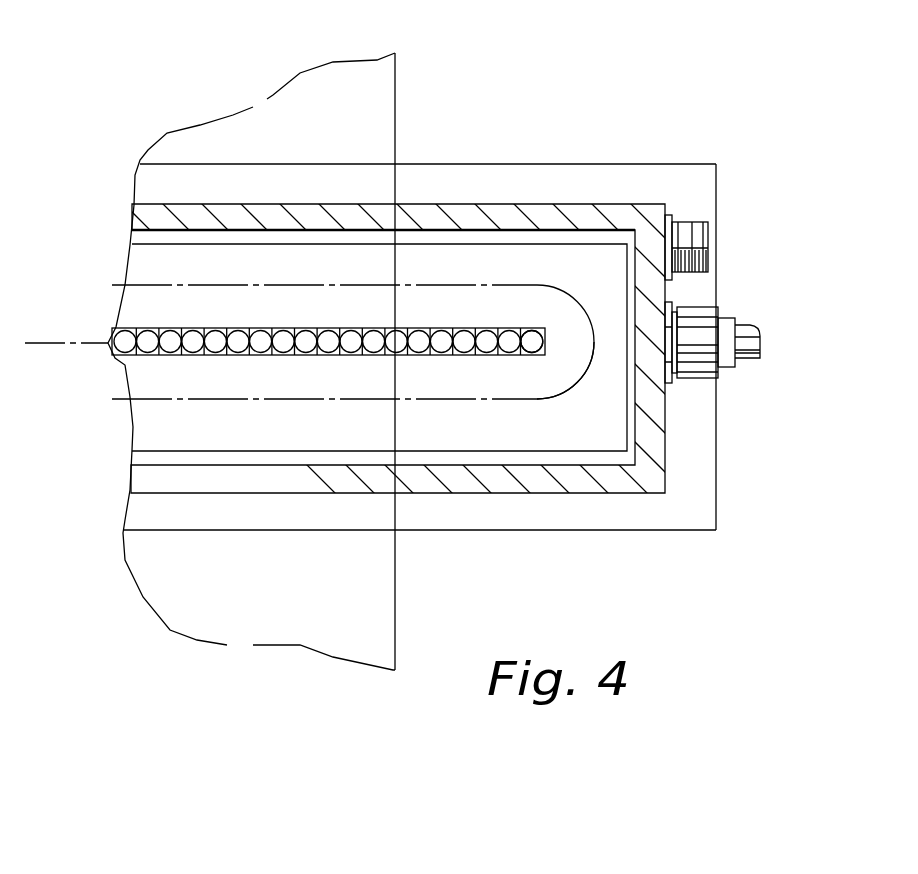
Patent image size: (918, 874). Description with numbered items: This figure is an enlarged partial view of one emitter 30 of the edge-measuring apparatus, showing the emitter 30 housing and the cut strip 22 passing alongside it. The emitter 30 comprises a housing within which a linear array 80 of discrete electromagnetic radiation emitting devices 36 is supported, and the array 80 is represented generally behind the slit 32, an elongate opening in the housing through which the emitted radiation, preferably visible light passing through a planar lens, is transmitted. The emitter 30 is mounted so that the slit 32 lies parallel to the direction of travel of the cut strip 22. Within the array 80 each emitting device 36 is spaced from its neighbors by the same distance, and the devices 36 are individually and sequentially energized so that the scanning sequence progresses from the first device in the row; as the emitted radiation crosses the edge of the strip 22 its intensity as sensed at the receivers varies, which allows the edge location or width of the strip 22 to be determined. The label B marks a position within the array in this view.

The cut strip 22 is at (395, 87).
The emitter 30 is at (620, 177).
The slit 32 is at (557, 288).
The electromagnetic radiation emitting device 36 is at (537, 357).
The array 80 is at (145, 362).
The ball B is at (550, 340).